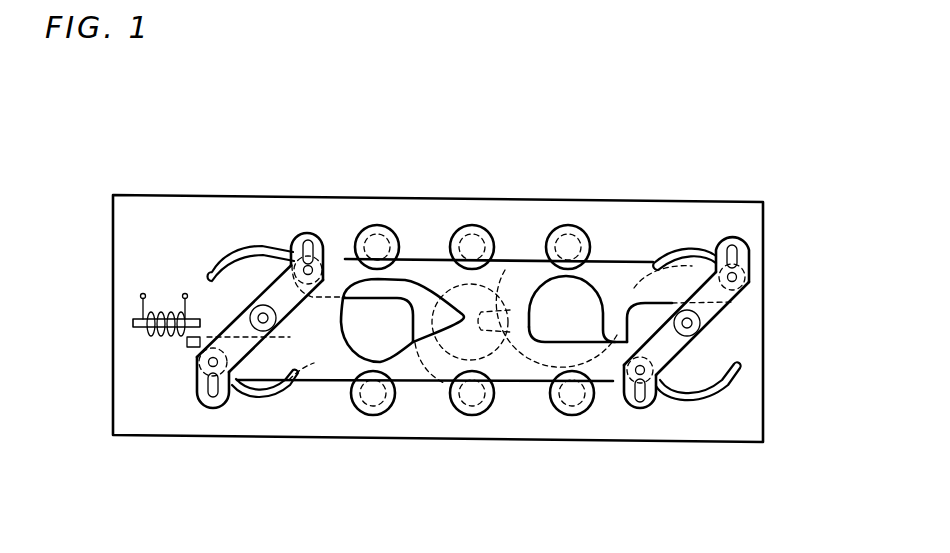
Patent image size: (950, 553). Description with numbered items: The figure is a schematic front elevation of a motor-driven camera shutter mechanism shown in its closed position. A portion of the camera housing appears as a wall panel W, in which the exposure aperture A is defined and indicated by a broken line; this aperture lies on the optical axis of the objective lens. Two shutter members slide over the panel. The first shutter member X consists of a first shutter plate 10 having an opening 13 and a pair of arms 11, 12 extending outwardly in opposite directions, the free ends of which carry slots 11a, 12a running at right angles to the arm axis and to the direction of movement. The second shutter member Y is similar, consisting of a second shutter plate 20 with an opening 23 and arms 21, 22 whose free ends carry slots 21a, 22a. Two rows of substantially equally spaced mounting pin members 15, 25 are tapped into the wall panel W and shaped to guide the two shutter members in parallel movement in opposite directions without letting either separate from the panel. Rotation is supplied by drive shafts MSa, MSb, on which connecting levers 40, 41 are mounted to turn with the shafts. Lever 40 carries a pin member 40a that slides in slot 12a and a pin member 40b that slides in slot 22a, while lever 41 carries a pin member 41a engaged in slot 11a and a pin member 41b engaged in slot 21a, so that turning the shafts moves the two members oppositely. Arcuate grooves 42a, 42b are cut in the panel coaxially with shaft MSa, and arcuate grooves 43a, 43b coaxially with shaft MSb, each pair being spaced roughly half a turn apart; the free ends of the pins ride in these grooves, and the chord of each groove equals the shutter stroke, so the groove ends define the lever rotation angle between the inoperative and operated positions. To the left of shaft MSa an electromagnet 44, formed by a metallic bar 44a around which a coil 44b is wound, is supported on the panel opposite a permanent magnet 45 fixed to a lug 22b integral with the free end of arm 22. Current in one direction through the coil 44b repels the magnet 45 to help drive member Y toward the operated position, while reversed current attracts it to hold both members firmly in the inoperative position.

The wall panel W is at (762, 222).
The first shutter plate 10 is at (529, 278).
The arm 11 is at (675, 256).
The slot 11a is at (740, 249).
The arm 12 is at (345, 257).
The slot 12a is at (300, 238).
The opening 13 is at (599, 284).
The mounting pin members 15 is at (378, 225).
The second shutter plate 20 is at (507, 370).
The arm 21 is at (612, 386).
The slot 21a is at (640, 409).
The arm 22 is at (258, 376).
The slot 22a is at (213, 398).
The lug 22b is at (198, 352).
The opening 23 is at (406, 277).
The mounting pin members 25 is at (372, 416).
The connecting lever 40 is at (243, 303).
The pin member 40a is at (325, 252).
The pin member 40b is at (190, 396).
The connecting lever 41 is at (712, 310).
The pin member 41a is at (740, 277).
The pin member 41b is at (658, 390).
The arcuate groove 42a is at (210, 271).
The arcuate groove 42b is at (280, 398).
The arcuate groove 43a is at (691, 250).
The arcuate groove 43b is at (735, 386).
The electromagnet 44 is at (134, 302).
The metallic bar 44a is at (133, 323).
The coil 44b is at (157, 334).
The permanent magnet 45 is at (186, 343).
The exposure aperture A is at (494, 279).
The first shutter member X is at (619, 278).
The second shutter member Y is at (410, 362).
The drive shaft MSa is at (262, 316).
The drive shaft MSb is at (700, 325).